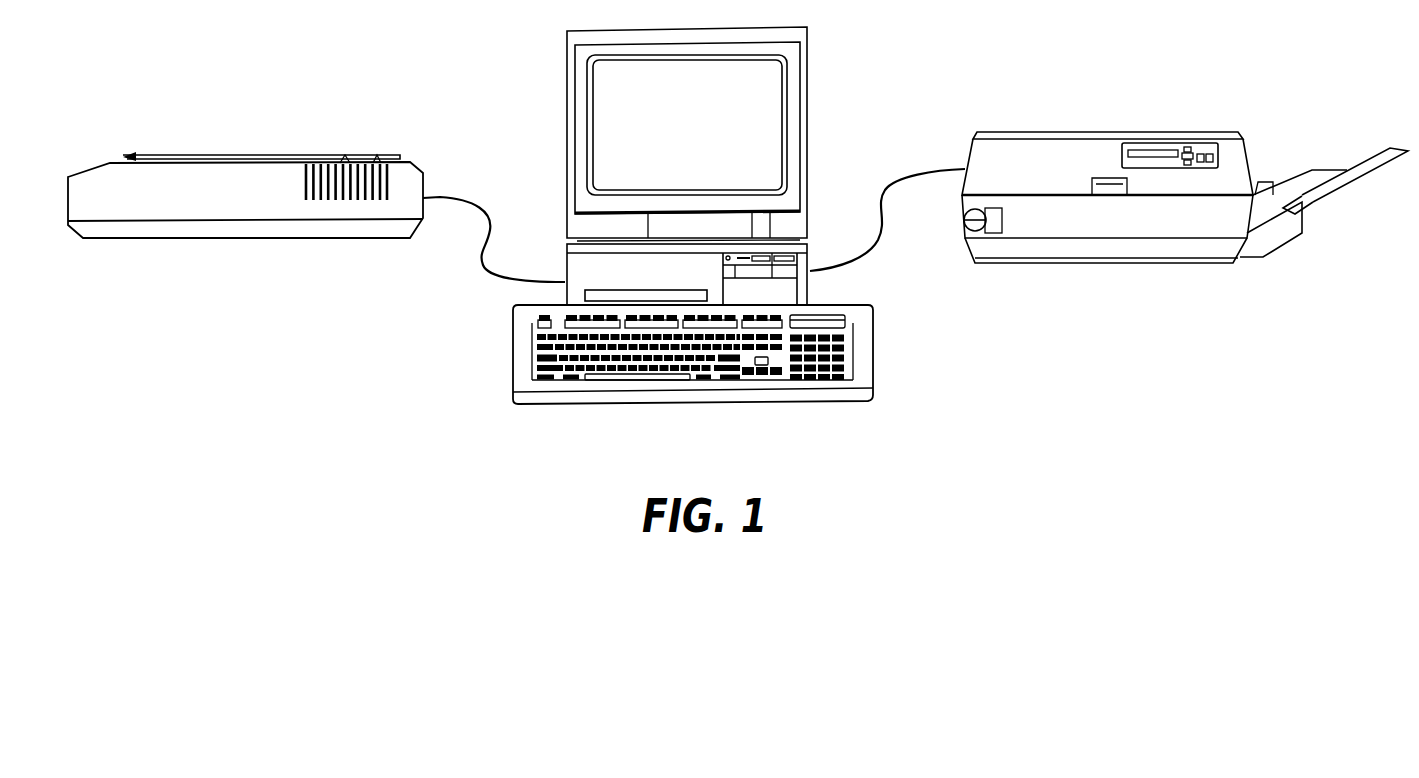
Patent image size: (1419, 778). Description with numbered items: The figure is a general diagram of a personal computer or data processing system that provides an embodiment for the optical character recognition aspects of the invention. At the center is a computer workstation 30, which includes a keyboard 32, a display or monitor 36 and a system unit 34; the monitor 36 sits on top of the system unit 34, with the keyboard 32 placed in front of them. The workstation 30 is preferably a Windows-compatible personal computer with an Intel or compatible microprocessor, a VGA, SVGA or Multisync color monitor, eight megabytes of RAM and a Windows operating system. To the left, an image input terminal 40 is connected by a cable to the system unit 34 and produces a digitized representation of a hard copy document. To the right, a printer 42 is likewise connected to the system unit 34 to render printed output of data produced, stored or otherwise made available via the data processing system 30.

The computer workstation 30 is at (833, 70).
The keyboard 32 is at (513, 353).
The system unit 34 is at (565, 267).
The display (monitor) 36 is at (567, 60).
The image input terminal 40 is at (282, 240).
The printer 42 is at (1099, 130).